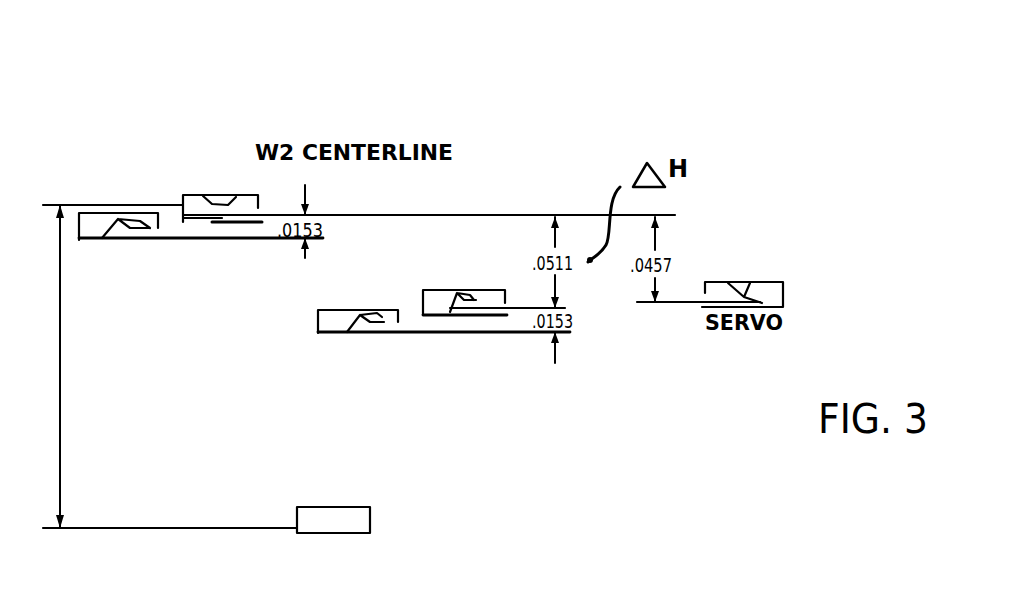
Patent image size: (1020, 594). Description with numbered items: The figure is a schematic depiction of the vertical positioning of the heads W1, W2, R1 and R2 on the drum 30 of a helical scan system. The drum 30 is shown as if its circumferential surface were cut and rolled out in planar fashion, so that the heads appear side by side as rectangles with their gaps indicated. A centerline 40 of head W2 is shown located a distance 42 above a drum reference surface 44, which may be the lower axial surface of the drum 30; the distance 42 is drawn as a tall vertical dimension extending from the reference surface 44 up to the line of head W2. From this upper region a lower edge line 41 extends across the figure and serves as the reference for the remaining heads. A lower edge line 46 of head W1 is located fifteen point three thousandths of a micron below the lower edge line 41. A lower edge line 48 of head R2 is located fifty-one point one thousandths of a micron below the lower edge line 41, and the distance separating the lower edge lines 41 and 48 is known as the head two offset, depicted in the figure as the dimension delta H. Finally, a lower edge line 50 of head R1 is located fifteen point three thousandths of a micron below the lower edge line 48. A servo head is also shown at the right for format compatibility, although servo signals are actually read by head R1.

The drum 30 is at (545, 77).
The centerline 40 is at (107, 203).
The lower edge line 41 is at (443, 215).
The distance 42 is at (60, 370).
The drum reference surface 44 is at (153, 528).
The lower edge line 46 is at (207, 238).
The lower edge line 48 is at (566, 308).
The lower edge line 50 is at (430, 333).
The head W1 is at (118, 242).
The head W2 is at (223, 195).
The head R1 is at (360, 333).
The head R2 is at (453, 292).